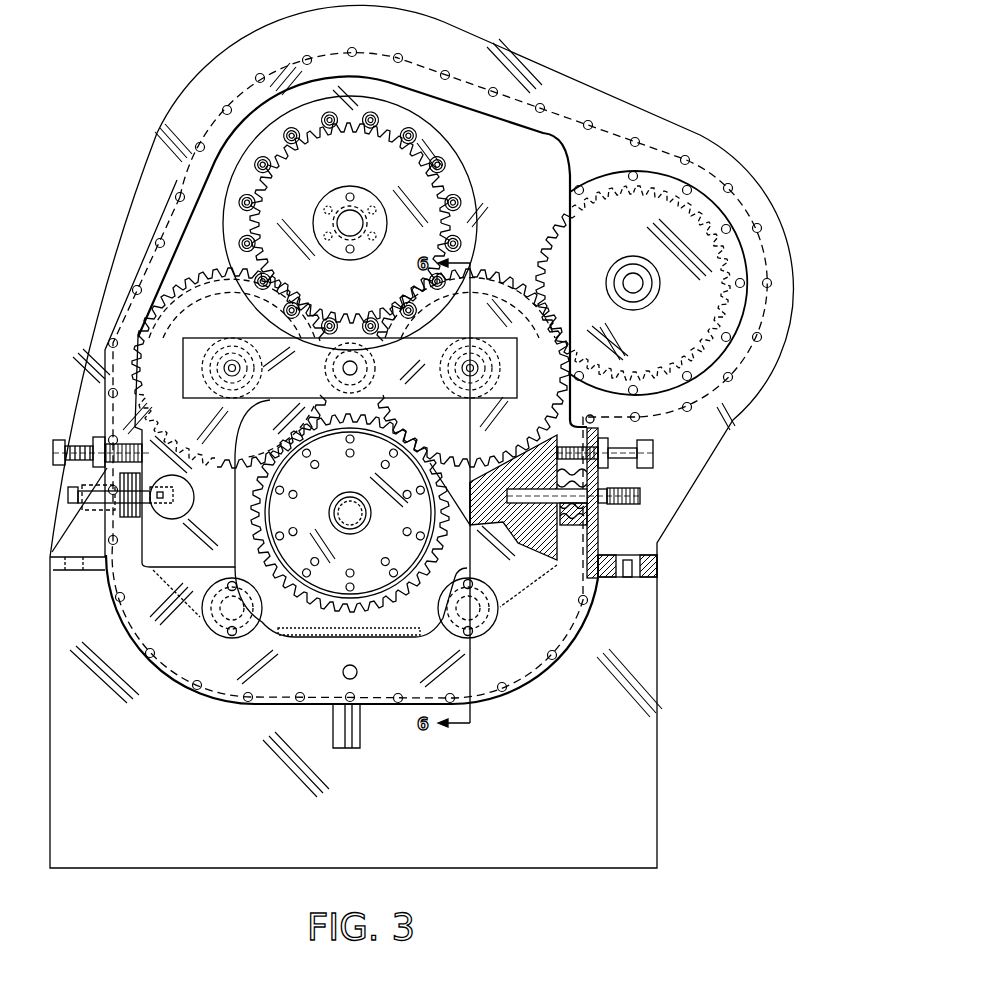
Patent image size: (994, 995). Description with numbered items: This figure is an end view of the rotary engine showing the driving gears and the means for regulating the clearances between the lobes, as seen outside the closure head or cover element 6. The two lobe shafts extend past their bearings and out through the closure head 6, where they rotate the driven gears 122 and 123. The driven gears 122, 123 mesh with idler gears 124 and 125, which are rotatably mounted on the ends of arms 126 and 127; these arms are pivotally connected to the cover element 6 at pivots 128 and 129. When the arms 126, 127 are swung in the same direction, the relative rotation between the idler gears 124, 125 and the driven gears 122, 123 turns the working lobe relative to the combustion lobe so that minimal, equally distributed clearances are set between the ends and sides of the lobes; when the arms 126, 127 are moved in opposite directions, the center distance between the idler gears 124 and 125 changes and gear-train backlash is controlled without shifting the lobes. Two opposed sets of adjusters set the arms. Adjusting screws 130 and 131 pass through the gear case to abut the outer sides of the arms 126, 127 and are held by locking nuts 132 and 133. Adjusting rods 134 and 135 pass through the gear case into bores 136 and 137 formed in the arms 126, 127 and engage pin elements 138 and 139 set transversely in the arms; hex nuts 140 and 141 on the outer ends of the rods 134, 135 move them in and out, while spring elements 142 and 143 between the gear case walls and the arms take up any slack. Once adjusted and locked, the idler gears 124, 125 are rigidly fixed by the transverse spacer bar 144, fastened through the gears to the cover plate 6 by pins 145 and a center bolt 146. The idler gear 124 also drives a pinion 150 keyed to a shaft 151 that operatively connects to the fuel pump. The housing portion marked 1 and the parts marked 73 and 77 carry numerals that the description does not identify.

The machine base housing 1 is at (658, 612).
The closure head 6 is at (530, 157).
The drive shaft 73 is at (355, 524).
The drive gear 77 is at (372, 577).
The driven gear 122 is at (297, 592).
The driven gear 123 is at (447, 177).
The idler gear 124 is at (490, 290).
The idler gear 125 is at (213, 293).
The arm 126 is at (182, 405).
The arm 127 is at (518, 413).
The pivot 128 is at (222, 612).
The pivot 129 is at (478, 632).
The adjusting screw 130 is at (631, 462).
The adjusting screw 131 is at (75, 447).
The locking nut 132 is at (589, 415).
The locking nut 133 is at (96, 438).
The adjusting rod 134 is at (570, 517).
The adjusting rod 135 is at (140, 500).
The bore 136 is at (490, 543).
The bore 137 is at (188, 504).
The pin element 138 is at (189, 487).
The pin element 139 is at (492, 457).
The hex nut 140 is at (622, 508).
The hex nut 141 is at (79, 510).
The spring element 142 is at (577, 522).
The spring element 143 is at (140, 520).
The transverse spacer bar 144 is at (350, 390).
The pins 145 is at (227, 367).
The center bolt 146 is at (340, 377).
The pinion 150 is at (597, 220).
The shaft 151 is at (634, 285).